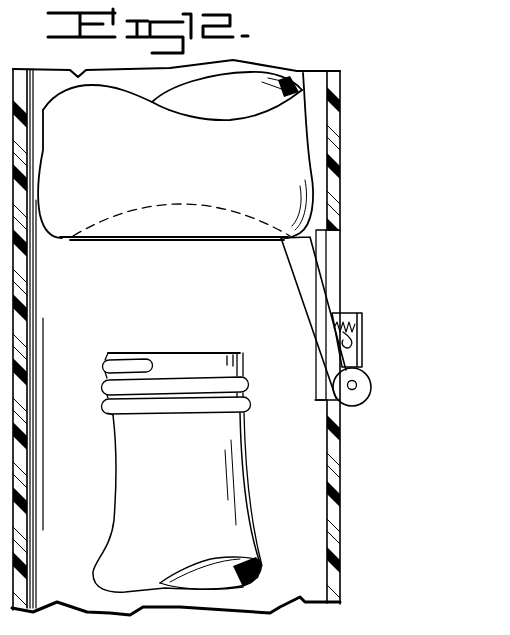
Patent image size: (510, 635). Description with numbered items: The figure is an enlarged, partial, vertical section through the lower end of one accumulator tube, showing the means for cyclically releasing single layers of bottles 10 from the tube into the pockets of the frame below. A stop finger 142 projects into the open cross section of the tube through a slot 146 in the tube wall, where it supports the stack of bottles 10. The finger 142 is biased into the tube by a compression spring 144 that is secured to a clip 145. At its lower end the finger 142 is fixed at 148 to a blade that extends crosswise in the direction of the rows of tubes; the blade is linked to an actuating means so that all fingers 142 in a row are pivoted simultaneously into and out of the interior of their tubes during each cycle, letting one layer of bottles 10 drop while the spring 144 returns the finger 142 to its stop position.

The bottle 10 is at (293, 135).
The stop finger 142 is at (313, 282).
The compression spring 144 is at (362, 342).
The clip 145 is at (363, 325).
The slot 146 is at (329, 250).
The fixing point 148 is at (357, 403).